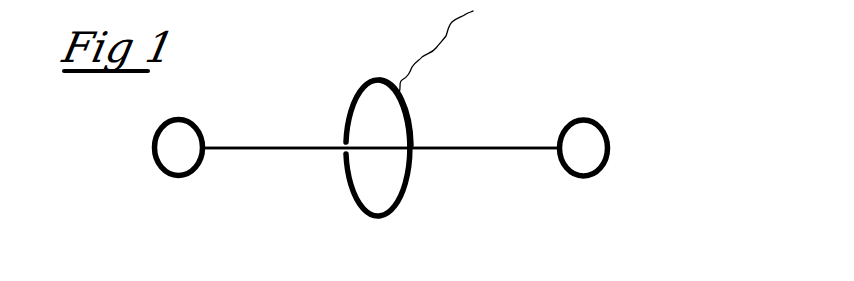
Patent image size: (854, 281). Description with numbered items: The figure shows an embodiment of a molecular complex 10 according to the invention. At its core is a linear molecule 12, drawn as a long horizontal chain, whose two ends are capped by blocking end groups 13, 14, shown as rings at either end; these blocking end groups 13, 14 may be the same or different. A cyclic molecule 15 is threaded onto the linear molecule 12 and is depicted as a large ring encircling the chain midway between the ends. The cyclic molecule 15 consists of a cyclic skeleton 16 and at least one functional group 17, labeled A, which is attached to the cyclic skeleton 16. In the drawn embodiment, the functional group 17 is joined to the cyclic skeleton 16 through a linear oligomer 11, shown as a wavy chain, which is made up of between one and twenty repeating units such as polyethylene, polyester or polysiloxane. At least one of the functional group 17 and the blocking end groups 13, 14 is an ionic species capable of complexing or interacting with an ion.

The molecular complex 10 is at (318, 61).
The linear oligomer 11 is at (440, 46).
The linear molecule 12 is at (255, 150).
The blocking end group 13 is at (596, 174).
The blocking end group 14 is at (174, 178).
The cyclic molecule 15 is at (418, 185).
The cyclic skeleton 16 is at (411, 117).
The functional group 17 is at (489, 10).